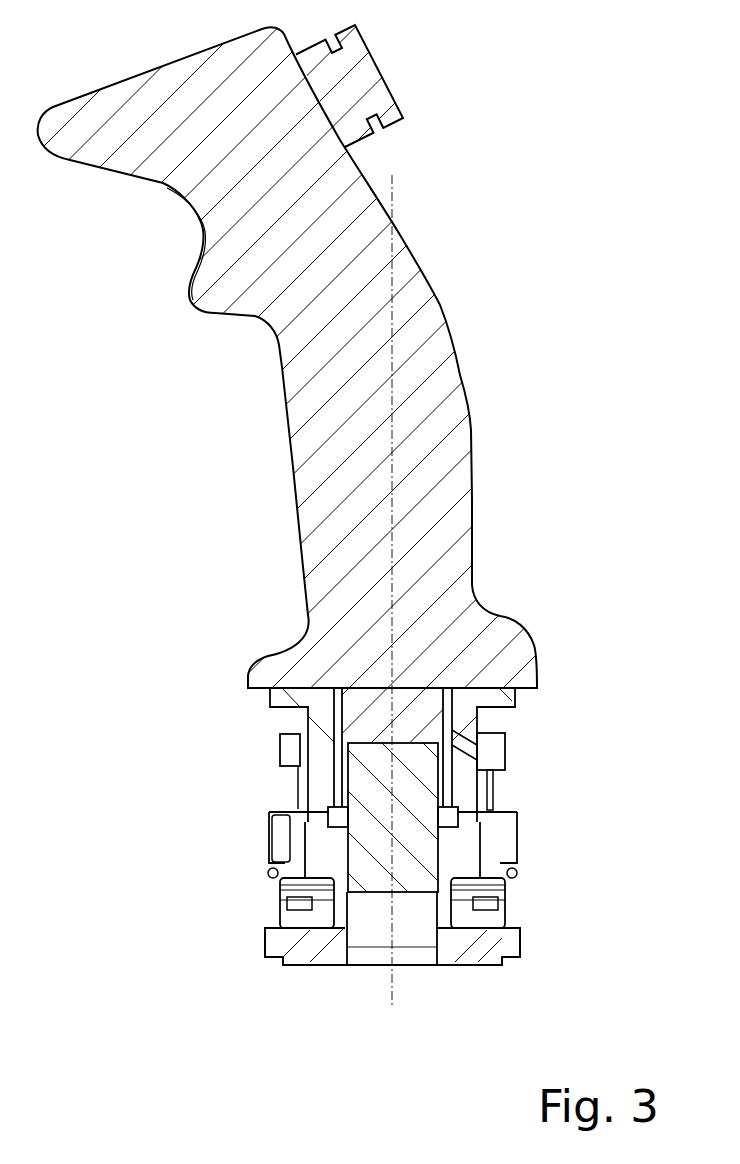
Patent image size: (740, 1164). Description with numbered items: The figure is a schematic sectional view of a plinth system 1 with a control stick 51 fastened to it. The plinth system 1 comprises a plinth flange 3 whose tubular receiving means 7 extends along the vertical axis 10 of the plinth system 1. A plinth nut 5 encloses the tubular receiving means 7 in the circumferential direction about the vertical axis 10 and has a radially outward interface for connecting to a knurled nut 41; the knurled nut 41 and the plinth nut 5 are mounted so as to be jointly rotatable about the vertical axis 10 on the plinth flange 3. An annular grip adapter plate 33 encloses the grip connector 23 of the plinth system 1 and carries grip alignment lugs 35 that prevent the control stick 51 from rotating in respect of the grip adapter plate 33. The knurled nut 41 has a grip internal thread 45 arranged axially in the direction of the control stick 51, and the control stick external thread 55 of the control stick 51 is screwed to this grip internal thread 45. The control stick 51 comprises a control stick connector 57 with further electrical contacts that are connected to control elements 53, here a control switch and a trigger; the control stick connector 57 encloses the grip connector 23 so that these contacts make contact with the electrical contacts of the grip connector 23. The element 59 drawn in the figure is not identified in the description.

The plinth system 1 is at (133, 788).
The plinth flange 3 is at (267, 943).
The plinth nut 5 is at (267, 882).
The tubular receiving means 7 is at (435, 905).
The vertical axis 10 is at (392, 175).
The grip connector 23 is at (283, 748).
The grip adapter plate 33 is at (293, 801).
The grip alignment lugs 35 is at (487, 790).
The knurled nut 41 is at (295, 785).
The grip internal thread 45 is at (307, 726).
The control stick 51 is at (440, 303).
The control elements 53 is at (380, 70).
The control stick external thread 55 is at (482, 752).
The control stick connector 57 is at (480, 745).
The ring 59 is at (480, 790).